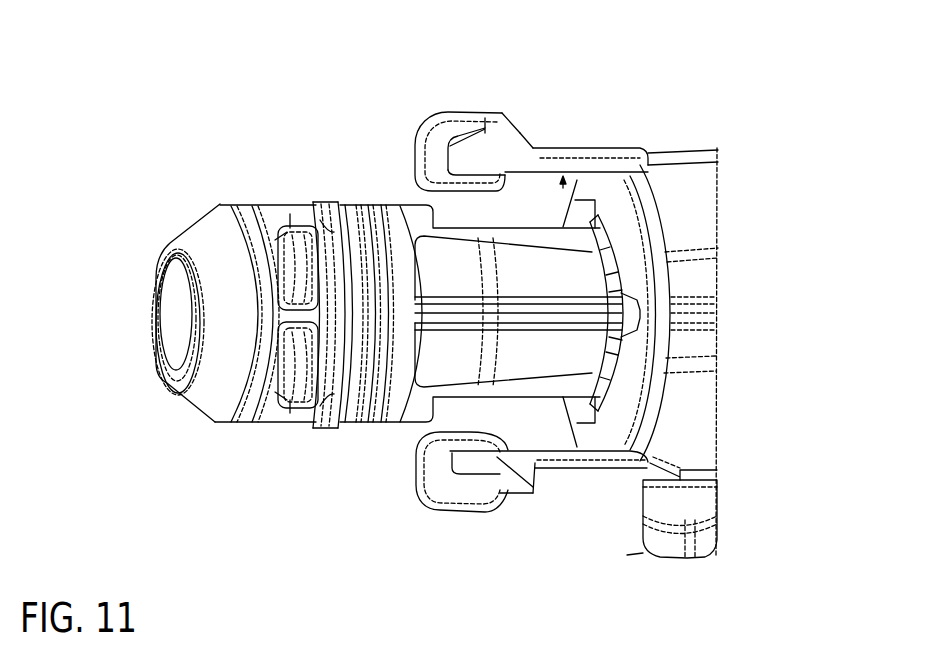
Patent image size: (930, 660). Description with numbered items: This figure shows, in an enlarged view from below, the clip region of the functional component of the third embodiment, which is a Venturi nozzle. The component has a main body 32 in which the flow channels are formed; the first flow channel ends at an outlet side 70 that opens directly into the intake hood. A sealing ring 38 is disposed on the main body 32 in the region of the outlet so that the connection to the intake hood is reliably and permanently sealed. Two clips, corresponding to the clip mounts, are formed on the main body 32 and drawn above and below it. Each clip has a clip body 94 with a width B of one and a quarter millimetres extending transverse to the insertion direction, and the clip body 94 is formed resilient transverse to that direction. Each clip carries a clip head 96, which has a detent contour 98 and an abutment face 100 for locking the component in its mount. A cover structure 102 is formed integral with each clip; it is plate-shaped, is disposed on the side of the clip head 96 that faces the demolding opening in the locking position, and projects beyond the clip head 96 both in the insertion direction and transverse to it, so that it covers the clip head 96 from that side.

The main body 32 is at (701, 426).
The sealing ring 38 is at (338, 417).
The outlet side 70 is at (160, 318).
The clip body 94 is at (599, 152).
The clip head 96 is at (484, 137).
The detent contour 98 is at (517, 106).
The abutment face 100 is at (550, 138).
The cover structure 102 is at (431, 138).
The width B is at (560, 190).